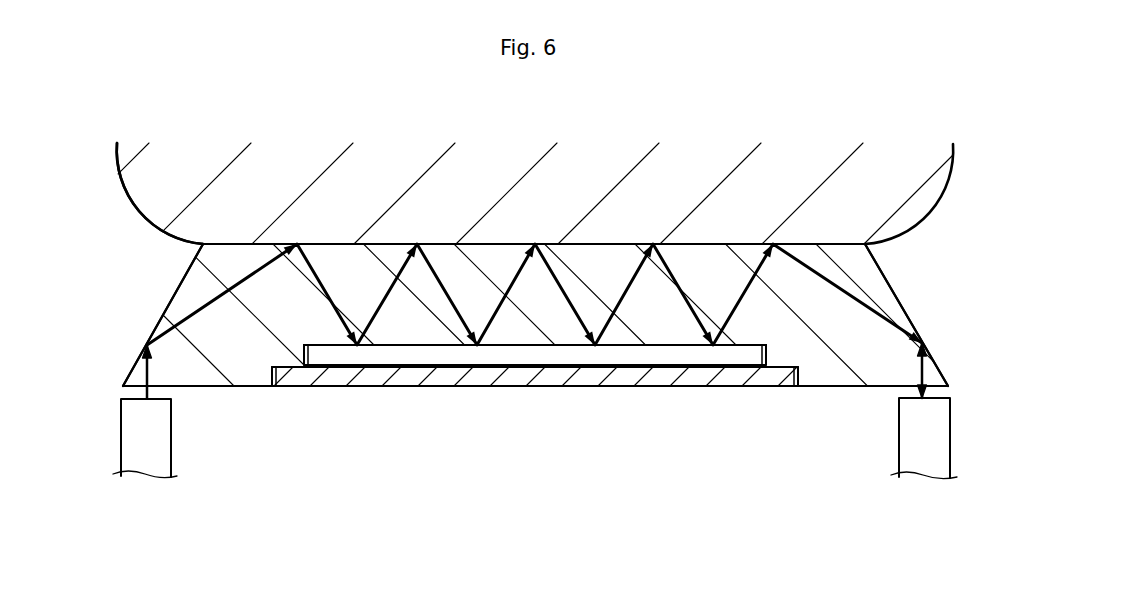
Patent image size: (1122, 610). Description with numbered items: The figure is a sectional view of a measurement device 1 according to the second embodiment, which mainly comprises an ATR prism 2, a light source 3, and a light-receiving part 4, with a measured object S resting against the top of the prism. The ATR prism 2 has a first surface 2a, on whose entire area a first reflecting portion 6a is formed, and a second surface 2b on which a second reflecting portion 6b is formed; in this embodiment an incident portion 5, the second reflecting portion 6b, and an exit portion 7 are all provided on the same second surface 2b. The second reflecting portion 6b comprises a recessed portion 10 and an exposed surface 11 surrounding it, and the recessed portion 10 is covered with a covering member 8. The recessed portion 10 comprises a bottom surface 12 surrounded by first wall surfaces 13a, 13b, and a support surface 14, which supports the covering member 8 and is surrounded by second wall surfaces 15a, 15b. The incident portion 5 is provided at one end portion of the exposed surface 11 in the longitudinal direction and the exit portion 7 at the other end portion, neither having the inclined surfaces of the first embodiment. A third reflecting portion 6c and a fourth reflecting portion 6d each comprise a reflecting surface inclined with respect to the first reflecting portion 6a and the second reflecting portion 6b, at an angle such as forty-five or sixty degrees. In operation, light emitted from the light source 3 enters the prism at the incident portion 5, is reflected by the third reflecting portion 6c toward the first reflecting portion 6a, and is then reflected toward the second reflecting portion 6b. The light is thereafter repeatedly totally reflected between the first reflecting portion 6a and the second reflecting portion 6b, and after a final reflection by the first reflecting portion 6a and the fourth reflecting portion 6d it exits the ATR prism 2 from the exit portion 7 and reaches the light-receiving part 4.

The measurement device 1 is at (945, 232).
The skin surface S is at (123, 200).
The ATR prism 2 is at (872, 292).
The first surface 2a is at (240, 244).
The second surface 2b is at (244, 387).
The first reflecting portion 6a is at (501, 240).
The second reflecting portion 6b is at (415, 350).
The third reflecting portion 6c is at (157, 310).
The fourth reflecting portion 6d is at (923, 322).
The light source 3 is at (180, 449).
The light-receiving part 4 is at (890, 441).
The incident portion 5 is at (137, 386).
The exit portion 7 is at (934, 388).
The covering member 8 is at (509, 380).
The recessed portion 10 is at (625, 358).
The exposed surface 11 is at (815, 388).
The bottom surface 12 is at (568, 349).
The first wall surface 13a is at (305, 357).
The first wall surface 13b is at (762, 354).
The support surface 14 is at (774, 369).
The second wall surface 15a is at (277, 380).
The second wall surface 15b is at (789, 387).